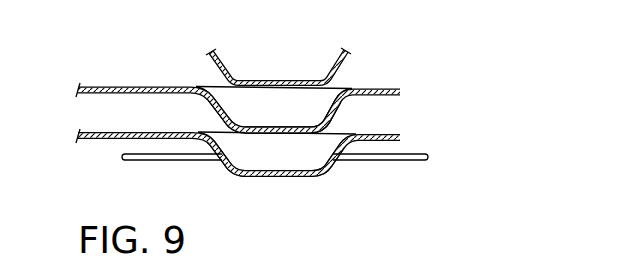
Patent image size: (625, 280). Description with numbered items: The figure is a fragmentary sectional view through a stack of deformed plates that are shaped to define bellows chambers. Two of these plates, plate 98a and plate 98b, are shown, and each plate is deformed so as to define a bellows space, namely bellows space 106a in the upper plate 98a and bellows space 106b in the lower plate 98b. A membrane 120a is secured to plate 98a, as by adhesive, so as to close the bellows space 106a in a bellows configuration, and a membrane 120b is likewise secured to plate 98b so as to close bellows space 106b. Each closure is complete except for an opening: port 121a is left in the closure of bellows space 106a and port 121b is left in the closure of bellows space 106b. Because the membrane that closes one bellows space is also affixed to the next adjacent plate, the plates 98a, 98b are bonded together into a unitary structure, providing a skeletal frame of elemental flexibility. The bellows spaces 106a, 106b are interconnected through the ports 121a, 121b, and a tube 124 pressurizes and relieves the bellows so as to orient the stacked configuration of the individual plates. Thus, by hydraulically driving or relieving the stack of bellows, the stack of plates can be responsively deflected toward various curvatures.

The plate 98a is at (400, 92).
The plate 98b is at (400, 138).
The bellows space 106a is at (220, 104).
The bellows space 106b is at (240, 165).
The membrane 120a is at (331, 80).
The membrane 120b is at (340, 130).
The port 121a is at (284, 79).
The port 121b is at (275, 131).
The tube 124 is at (412, 163).